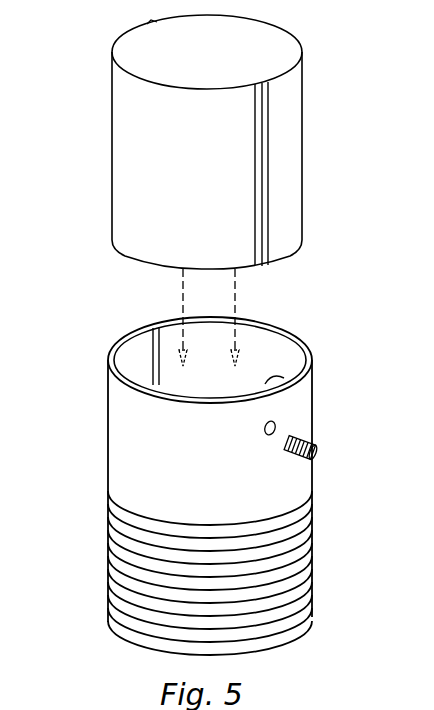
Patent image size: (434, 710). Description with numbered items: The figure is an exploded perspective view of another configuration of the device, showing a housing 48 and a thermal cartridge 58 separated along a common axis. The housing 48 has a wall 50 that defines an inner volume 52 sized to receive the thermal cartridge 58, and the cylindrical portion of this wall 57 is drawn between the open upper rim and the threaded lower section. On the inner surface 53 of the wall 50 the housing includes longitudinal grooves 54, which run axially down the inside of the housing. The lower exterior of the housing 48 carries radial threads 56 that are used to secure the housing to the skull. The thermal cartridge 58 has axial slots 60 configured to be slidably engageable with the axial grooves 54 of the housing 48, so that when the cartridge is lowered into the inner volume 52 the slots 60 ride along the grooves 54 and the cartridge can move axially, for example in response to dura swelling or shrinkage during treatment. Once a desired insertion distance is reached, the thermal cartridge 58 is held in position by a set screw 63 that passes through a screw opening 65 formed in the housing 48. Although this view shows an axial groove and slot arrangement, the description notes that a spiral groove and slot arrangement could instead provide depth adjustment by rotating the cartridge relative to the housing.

The housing 48 is at (108, 398).
The wall 50 is at (312, 347).
The inner volume 52 is at (262, 362).
The inner surface 53 is at (133, 355).
The longitudinal grooves 54 is at (268, 157).
The radial threads 56 is at (308, 558).
The cylindrical wall 57 is at (127, 473).
The thermal cartridge 58 is at (303, 50).
The axial slots 60 is at (153, 330).
The set screw 63 is at (318, 452).
The screw opening 65 is at (275, 425).